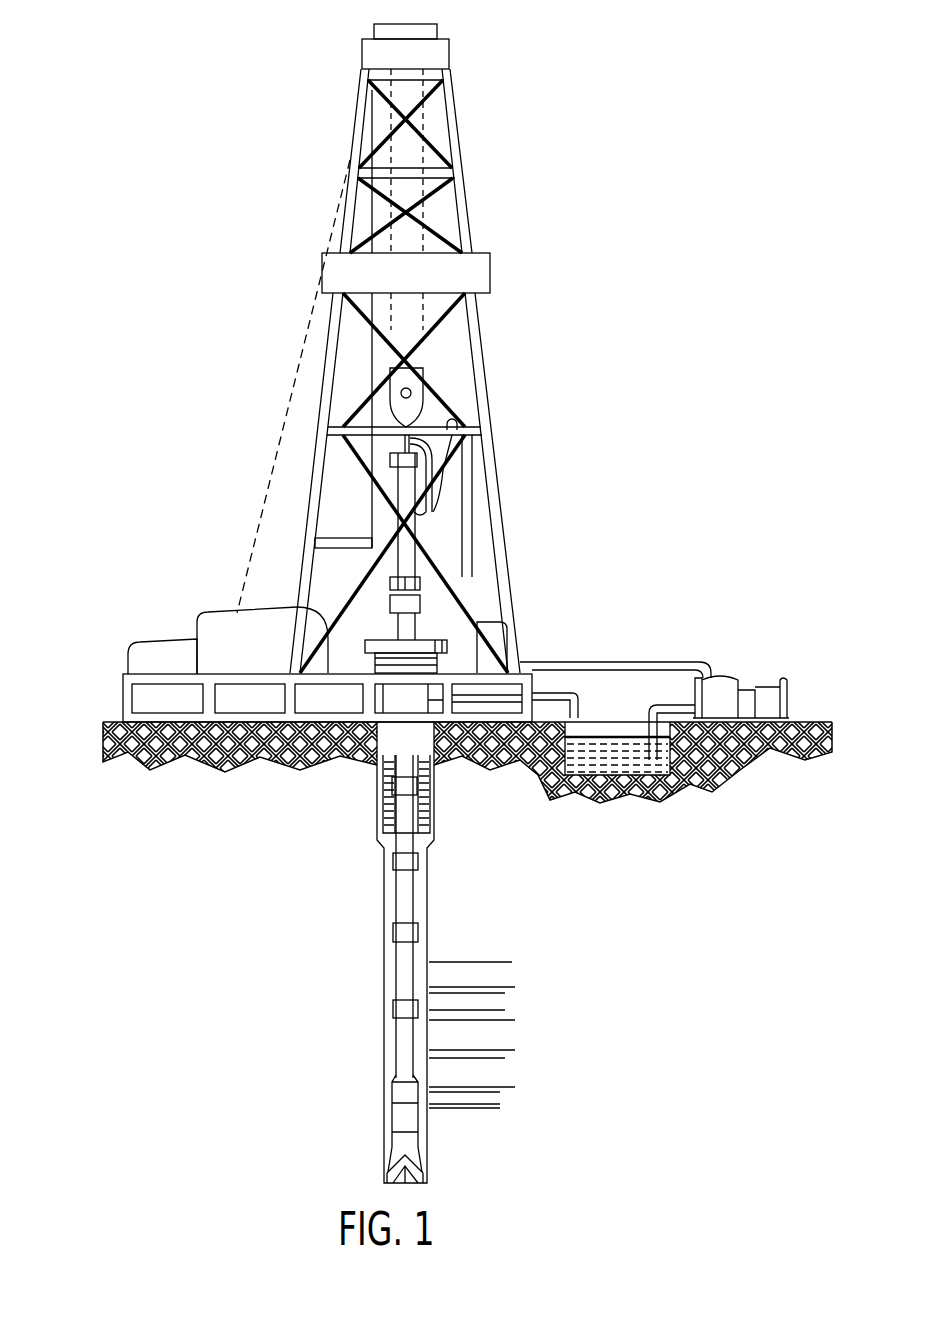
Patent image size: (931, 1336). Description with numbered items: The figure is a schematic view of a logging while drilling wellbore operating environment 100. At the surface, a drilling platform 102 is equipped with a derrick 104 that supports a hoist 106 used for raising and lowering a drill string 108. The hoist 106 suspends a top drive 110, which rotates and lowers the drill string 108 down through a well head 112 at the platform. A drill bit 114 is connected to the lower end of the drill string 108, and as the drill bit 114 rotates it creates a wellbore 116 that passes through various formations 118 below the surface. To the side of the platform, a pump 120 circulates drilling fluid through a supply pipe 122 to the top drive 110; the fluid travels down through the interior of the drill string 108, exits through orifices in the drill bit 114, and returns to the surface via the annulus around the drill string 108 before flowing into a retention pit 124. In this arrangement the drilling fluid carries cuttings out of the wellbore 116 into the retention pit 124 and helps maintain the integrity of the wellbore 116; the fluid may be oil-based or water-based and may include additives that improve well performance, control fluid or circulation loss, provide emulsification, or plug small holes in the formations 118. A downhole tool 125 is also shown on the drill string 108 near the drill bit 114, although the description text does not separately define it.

The logging while drilling wellbore operating environment 100 is at (284, 79).
The drilling platform 102 is at (123, 692).
The derrick 104 is at (463, 206).
The hoist 106 is at (423, 397).
The drill string 108 is at (415, 898).
The top drive 110 is at (412, 478).
The well head 112 is at (427, 637).
The drill bit 114 is at (425, 1170).
The wellbore 116 is at (425, 922).
The formations 118 is at (519, 957).
The pump 120 is at (723, 688).
The supply pipe 122 is at (615, 660).
The retention pit 124 is at (612, 770).
The downhole tool 125 is at (390, 1093).